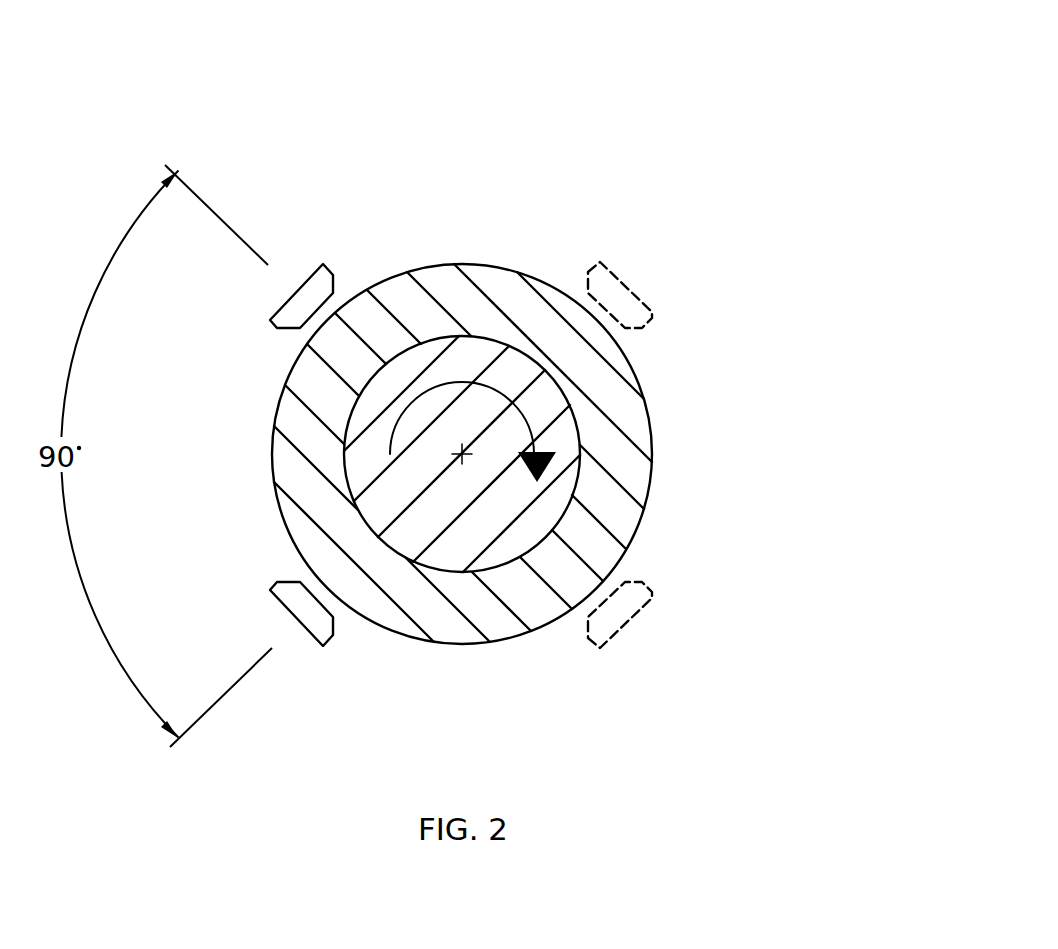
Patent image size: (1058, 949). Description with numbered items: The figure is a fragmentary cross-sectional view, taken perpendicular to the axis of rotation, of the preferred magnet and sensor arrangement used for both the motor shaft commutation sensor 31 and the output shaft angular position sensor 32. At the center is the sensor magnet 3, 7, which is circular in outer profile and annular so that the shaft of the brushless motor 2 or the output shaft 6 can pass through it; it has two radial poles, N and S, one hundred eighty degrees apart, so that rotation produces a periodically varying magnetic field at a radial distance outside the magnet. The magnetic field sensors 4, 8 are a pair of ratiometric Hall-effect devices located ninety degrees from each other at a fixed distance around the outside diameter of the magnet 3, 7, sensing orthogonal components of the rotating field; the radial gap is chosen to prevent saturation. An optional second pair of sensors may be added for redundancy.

The motor shaft commutation sensor 31 is at (574, 410).
The output shaft angular position sensor 32 is at (574, 410).
The brushless motor 2 is at (611, 454).
The output shaft 6 is at (537, 421).
The motor shaft sensor magnet 3 is at (493, 514).
The output shaft sensor magnet 7 is at (493, 514).
The motor shaft magnetic field sensors 4 is at (390, 665).
The output shaft magnetic field sensors 8 is at (390, 665).